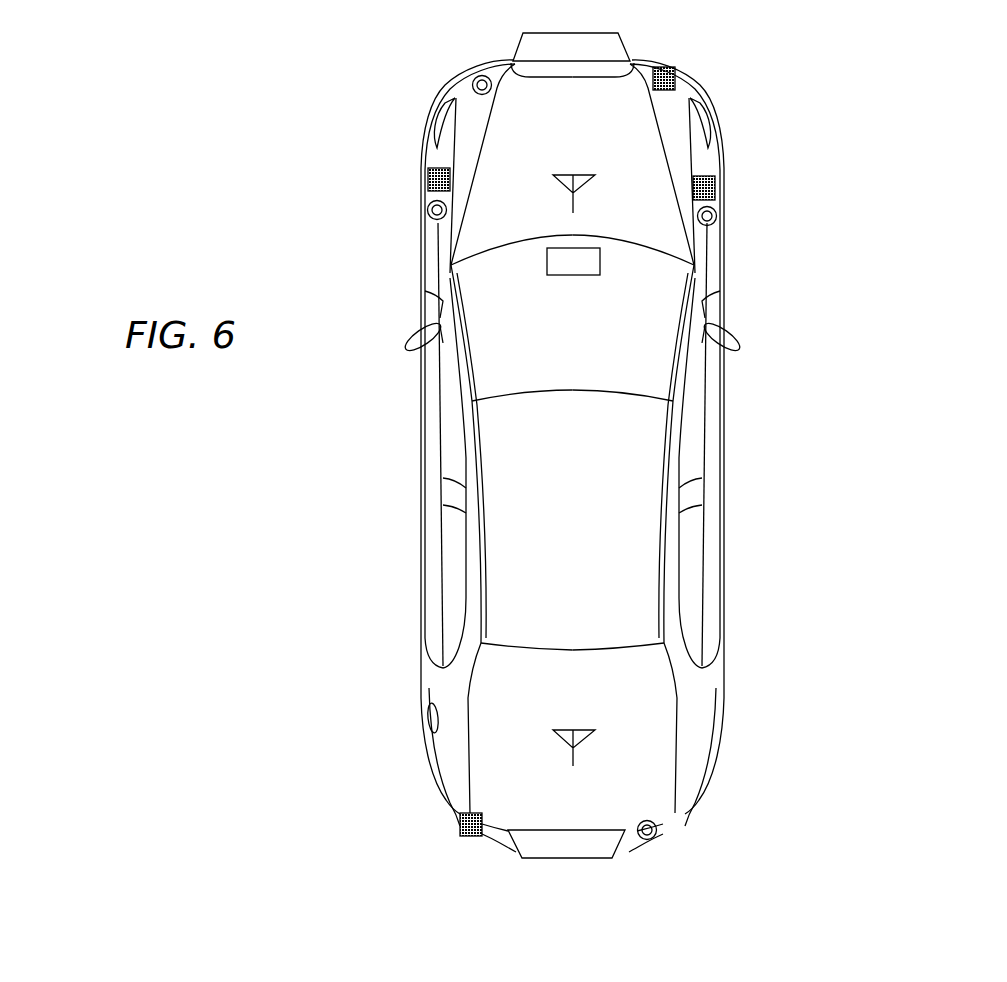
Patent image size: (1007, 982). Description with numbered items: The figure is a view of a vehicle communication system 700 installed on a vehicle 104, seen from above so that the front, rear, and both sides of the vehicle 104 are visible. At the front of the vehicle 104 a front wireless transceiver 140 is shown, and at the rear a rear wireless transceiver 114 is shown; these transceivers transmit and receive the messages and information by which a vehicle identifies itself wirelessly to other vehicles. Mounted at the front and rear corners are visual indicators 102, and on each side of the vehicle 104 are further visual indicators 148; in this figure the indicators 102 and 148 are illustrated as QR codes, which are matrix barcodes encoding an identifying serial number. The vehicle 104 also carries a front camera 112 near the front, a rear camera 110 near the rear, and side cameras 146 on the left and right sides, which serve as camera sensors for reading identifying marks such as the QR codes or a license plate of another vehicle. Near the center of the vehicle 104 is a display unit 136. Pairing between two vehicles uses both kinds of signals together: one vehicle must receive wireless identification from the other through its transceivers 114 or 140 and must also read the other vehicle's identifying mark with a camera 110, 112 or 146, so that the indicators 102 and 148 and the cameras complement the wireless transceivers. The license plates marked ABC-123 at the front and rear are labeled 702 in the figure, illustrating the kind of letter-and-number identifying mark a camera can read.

The vehicle communication system 700 is at (858, 125).
The license plate 702 is at (623, 52).
The vehicle 104 is at (724, 413).
The visual indicator 102 is at (677, 73).
The rear camera 110 is at (657, 838).
The front camera 112 is at (472, 80).
The rear wireless transceiver 114 is at (585, 732).
The display unit 136 is at (587, 277).
The front wireless transceiver 140 is at (582, 182).
The side camera 146 is at (426, 209).
The visual indicator 148 is at (425, 187).